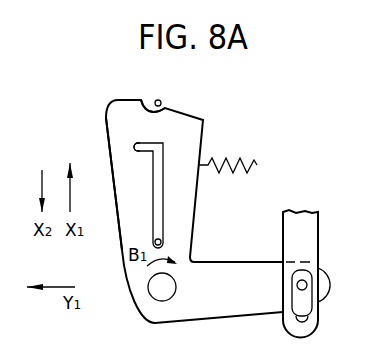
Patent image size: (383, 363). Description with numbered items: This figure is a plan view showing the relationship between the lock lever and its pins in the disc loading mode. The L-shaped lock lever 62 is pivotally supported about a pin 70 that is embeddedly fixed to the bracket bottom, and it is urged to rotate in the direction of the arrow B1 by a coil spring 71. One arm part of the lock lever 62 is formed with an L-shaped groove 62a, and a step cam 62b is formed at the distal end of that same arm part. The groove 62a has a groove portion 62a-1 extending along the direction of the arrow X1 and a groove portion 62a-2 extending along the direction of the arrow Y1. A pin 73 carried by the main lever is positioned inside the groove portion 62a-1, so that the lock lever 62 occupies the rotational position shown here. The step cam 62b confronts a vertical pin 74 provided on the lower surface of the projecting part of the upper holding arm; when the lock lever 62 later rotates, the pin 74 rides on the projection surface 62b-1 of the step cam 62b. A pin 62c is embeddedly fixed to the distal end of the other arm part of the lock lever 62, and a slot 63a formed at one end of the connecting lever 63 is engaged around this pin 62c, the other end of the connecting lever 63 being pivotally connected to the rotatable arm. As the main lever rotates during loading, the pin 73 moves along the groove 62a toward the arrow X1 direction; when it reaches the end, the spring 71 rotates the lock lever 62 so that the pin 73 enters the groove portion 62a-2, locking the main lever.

The lock lever 62 is at (215, 313).
The L-shaped groove 62a is at (153, 181).
The groove portion 62a-1 is at (165, 198).
The groove portion 62a-2 is at (135, 142).
The step cam 62b is at (145, 97).
The projection surface 62b-1 is at (127, 99).
The pin 62c is at (312, 283).
The connecting lever 63 is at (312, 238).
The slot 63a is at (312, 318).
The pin 70 is at (158, 296).
The coil spring 71 is at (222, 161).
The pin 73 is at (164, 234).
The vertical pin 74 is at (161, 101).